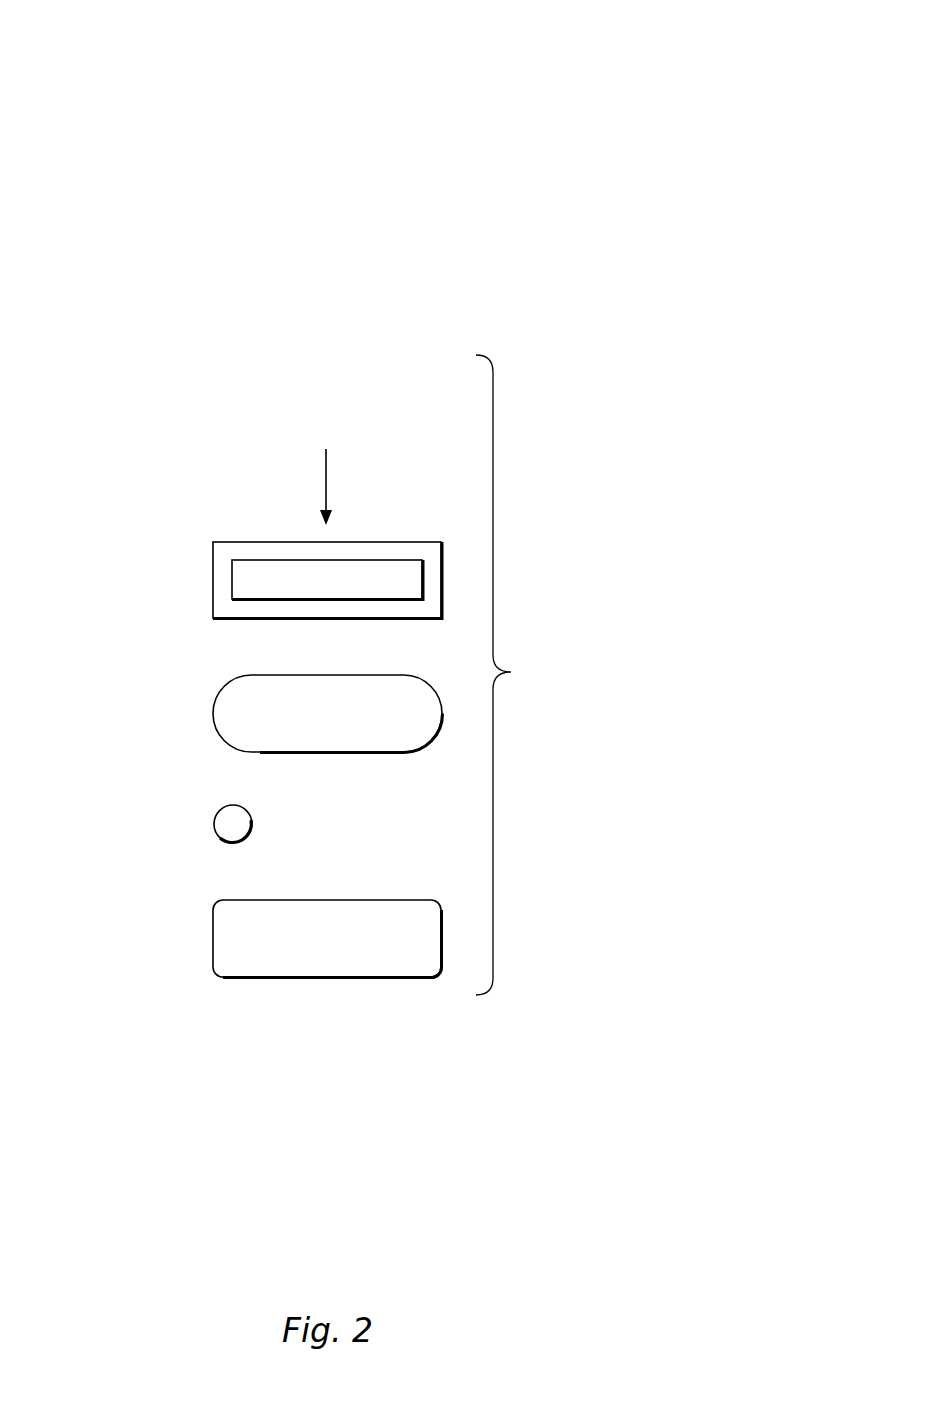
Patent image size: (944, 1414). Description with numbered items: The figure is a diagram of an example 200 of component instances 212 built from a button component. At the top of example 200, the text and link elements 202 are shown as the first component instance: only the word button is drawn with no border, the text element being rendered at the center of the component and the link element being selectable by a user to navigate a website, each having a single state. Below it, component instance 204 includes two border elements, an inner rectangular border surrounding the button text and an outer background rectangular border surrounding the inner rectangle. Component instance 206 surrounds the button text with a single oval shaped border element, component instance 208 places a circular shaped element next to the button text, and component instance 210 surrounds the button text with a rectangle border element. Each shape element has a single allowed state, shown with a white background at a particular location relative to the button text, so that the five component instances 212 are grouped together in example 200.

The example 200 is at (701, 95).
The text and link elements 202 is at (212, 382).
The component instance 204 is at (212, 568).
The component instance 206 is at (217, 695).
The component instance 208 is at (213, 818).
The component instance 210 is at (212, 923).
The component instances 212 is at (564, 675).